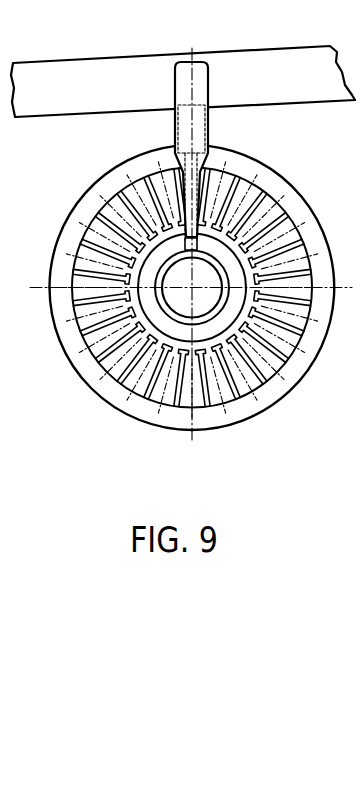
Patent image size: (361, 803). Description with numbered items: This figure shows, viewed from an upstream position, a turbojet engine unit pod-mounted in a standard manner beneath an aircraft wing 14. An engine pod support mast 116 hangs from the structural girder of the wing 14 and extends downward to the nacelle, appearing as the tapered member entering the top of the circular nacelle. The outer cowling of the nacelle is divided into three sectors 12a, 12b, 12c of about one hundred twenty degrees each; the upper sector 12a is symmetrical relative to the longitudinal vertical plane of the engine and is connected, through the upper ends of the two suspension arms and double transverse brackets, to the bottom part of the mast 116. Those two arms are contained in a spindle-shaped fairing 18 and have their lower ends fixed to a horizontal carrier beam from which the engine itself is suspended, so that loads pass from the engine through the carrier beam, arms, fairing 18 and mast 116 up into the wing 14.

The wing 14 is at (247, 82).
The engine pod support mast 116 is at (195, 126).
The upper sector of the outer cowling 12a is at (112, 182).
The sector of the outer cowling 12b is at (82, 374).
The sector of the outer cowling 12c is at (302, 373).
The spindle-shaped fairing 18 is at (248, 185).